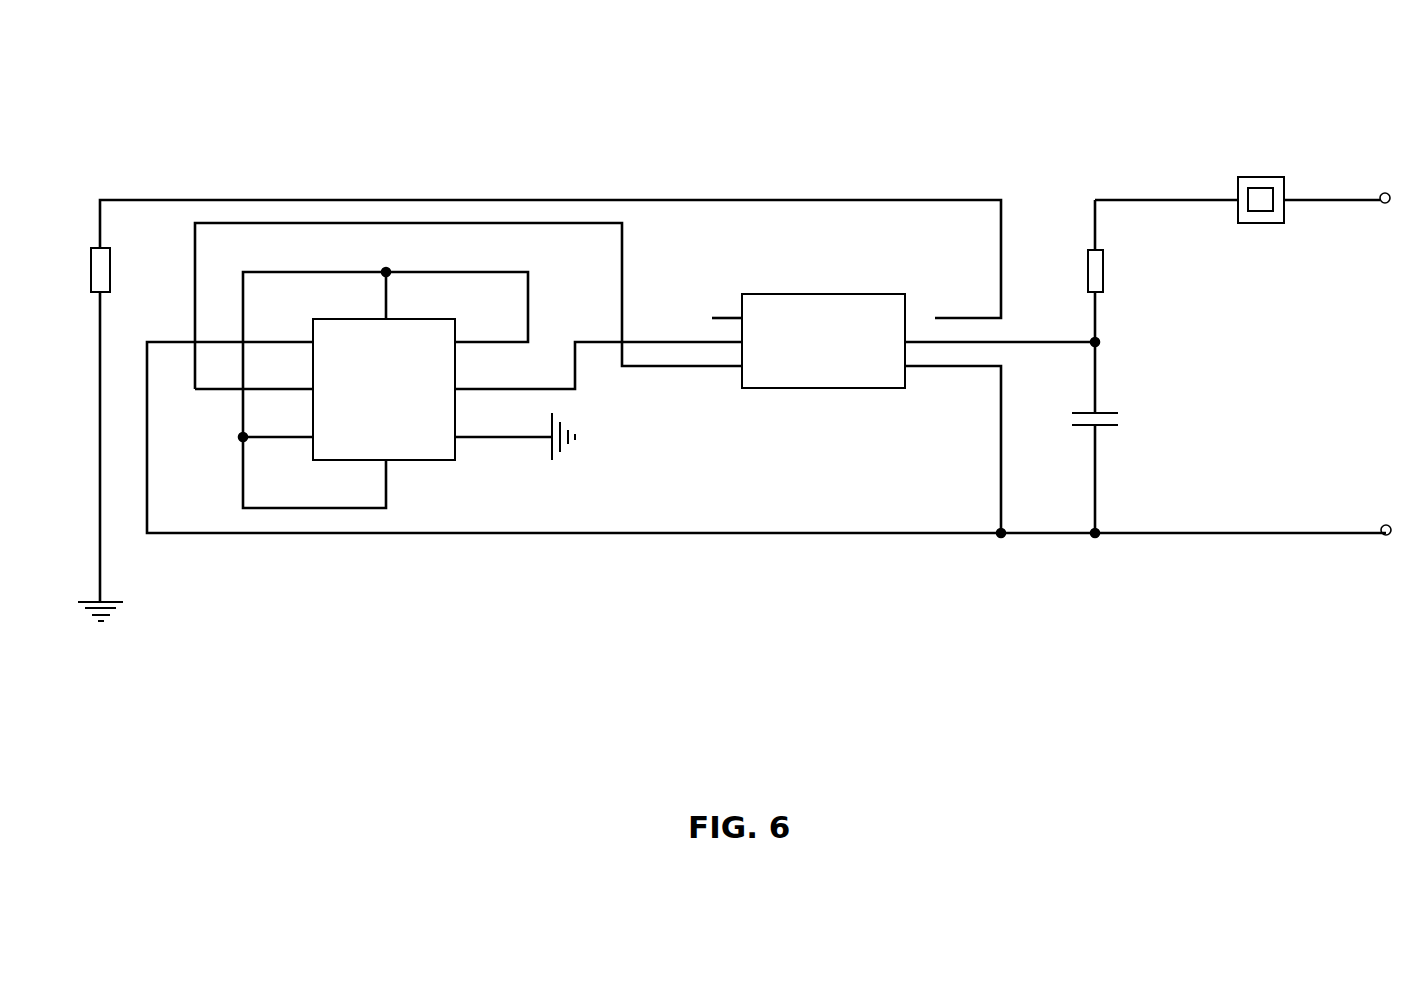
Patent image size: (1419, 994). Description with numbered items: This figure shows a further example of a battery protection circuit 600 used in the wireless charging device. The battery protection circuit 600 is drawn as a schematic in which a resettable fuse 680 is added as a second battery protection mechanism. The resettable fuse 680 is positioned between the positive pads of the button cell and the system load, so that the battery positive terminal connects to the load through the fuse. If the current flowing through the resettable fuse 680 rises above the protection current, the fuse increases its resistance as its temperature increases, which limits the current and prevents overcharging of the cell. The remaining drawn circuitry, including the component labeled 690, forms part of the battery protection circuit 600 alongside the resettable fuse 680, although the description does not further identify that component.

The battery protection circuit 600 is at (726, 118).
The dual MOSFET switch U6 690 is at (400, 338).
The resettable fuse 680 is at (1259, 197).